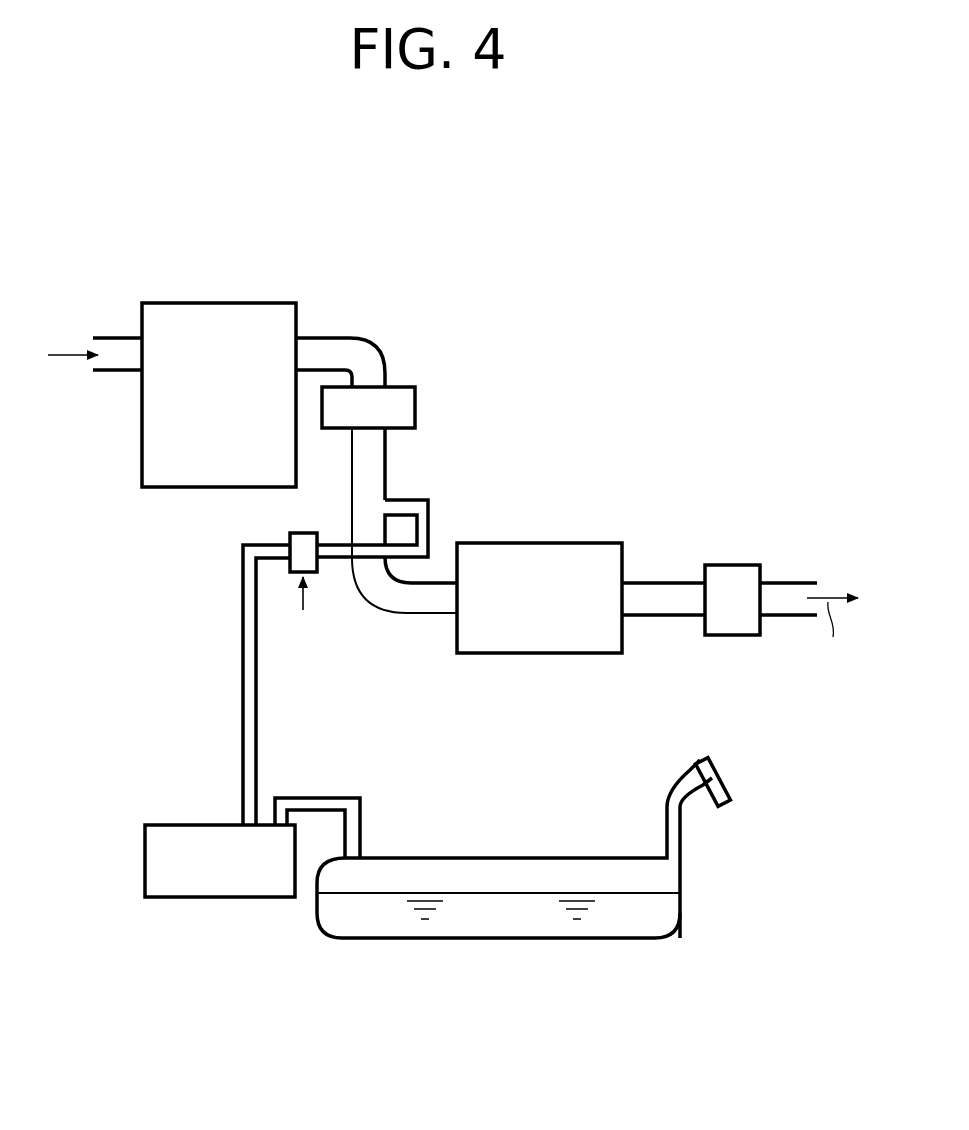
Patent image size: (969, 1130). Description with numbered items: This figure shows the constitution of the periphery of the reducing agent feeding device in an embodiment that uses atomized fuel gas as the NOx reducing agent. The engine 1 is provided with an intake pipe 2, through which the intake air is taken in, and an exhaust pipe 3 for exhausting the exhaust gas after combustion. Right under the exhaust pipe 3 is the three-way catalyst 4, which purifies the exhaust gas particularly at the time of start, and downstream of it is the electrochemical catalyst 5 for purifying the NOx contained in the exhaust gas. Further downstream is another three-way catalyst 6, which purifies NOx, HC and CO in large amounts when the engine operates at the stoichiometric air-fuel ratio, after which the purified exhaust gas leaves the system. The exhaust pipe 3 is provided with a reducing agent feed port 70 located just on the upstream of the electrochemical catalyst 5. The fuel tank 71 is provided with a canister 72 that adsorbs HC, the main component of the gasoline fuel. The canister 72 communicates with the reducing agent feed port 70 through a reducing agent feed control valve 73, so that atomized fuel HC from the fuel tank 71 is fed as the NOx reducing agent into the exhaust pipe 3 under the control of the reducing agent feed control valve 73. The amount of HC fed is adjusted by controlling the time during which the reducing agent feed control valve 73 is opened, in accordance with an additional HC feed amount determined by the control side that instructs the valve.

The engine 1 is at (242, 303).
The intake pipe 2 is at (118, 338).
The exhaust pipe 3 is at (328, 338).
The three-way catalyst 4 is at (398, 387).
The electrochemical catalyst 5 is at (560, 543).
The three-way catalyst 6 is at (744, 565).
The reducing agent feed port 70 is at (381, 508).
The fuel tank 71 is at (590, 865).
The canister 72 is at (182, 825).
The reducing agent feed control valve 73 is at (290, 538).